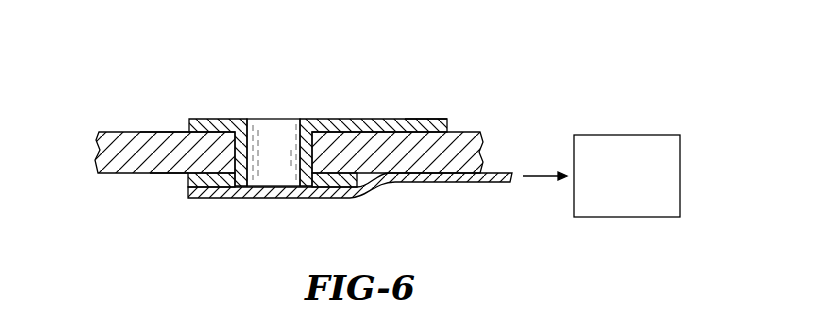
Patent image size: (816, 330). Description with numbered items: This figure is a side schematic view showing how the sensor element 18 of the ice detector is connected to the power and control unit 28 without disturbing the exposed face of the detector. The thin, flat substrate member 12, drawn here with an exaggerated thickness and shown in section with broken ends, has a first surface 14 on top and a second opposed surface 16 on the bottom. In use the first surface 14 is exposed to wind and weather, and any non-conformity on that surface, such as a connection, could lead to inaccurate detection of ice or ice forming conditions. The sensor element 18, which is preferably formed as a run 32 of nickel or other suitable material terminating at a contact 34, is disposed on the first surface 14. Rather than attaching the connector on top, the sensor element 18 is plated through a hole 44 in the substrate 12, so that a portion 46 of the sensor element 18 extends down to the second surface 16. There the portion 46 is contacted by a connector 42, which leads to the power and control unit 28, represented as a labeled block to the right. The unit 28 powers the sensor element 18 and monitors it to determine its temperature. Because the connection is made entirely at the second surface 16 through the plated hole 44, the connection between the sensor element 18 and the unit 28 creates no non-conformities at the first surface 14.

The substrate member 12 is at (127, 133).
The first surface 14 is at (162, 132).
The second opposed surface 16 is at (179, 175).
The sensor element 18 is at (410, 117).
The power and control unit 28 is at (622, 134).
The run 32 is at (355, 128).
The contact 34 is at (257, 86).
The connector 42 is at (415, 183).
The hole 44 is at (278, 128).
The portion of sensor element 46 is at (215, 184).